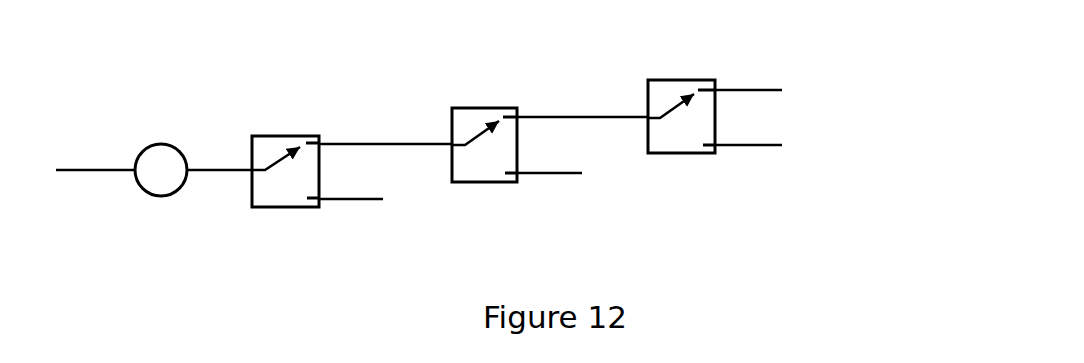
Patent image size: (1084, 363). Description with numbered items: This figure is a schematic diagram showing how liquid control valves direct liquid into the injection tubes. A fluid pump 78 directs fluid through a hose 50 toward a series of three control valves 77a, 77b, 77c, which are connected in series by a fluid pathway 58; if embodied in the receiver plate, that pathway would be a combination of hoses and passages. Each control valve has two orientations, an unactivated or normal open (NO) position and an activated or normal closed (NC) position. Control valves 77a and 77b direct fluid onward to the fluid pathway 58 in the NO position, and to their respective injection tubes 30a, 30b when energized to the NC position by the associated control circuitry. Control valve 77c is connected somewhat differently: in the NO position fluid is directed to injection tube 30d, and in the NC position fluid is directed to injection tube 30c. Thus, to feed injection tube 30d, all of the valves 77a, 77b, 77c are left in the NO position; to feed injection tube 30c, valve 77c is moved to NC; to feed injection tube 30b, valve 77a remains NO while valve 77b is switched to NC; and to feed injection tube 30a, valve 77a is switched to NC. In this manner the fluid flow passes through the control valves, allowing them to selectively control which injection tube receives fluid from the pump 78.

The fluid pump 78 is at (161, 170).
The hose 50 is at (216, 167).
The control valve 77a is at (288, 131).
The control valve 77b is at (483, 103).
The control valve 77c is at (674, 71).
The fluid pathway 58 is at (401, 141).
The injection tube 30a is at (368, 204).
The injection tube 30b is at (551, 177).
The injection tube 30c is at (758, 149).
The injection tube 30d is at (756, 86).